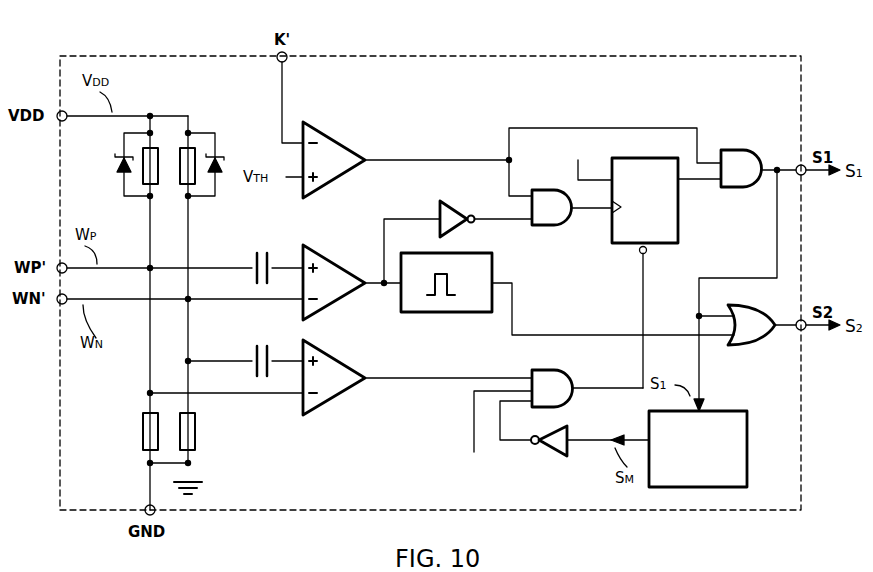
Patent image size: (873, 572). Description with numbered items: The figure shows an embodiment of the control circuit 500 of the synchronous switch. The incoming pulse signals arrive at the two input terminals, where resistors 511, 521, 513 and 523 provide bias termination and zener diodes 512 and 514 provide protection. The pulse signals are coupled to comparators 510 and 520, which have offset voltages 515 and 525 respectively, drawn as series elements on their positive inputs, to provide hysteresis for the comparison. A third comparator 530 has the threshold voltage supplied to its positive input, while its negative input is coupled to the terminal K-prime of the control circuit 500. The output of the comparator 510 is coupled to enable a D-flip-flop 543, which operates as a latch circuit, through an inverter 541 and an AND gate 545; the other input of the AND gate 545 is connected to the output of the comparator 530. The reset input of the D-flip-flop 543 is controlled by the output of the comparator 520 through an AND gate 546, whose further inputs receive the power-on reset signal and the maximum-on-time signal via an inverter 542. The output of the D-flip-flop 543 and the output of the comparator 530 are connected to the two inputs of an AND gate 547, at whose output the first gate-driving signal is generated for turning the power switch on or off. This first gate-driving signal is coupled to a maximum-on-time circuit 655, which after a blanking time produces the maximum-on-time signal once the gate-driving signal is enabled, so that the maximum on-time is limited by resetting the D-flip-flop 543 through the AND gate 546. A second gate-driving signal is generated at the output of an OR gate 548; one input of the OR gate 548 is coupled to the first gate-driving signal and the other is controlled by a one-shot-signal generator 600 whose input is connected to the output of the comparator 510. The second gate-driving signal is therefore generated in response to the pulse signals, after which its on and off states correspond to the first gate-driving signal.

The control circuit 500 is at (801, 99).
The comparator 510 is at (331, 306).
The resistor 511 is at (147, 197).
The zener diode 512 is at (116, 166).
The resistor 513 is at (193, 197).
The zener diode 514 is at (216, 144).
The offset voltage 515 is at (258, 249).
The comparator 520 is at (331, 401).
The resistor 521 is at (142, 436).
The resistor 523 is at (196, 436).
The offset voltage 525 is at (258, 343).
The comparator 530 is at (331, 184).
The inverter 541 is at (451, 205).
The inverter 542 is at (545, 459).
The D-flip-flop 543 is at (662, 248).
The AND gate 545 is at (548, 227).
The AND gate 546 is at (576, 405).
The AND gate 547 is at (738, 189).
The OR gate 548 is at (752, 347).
The one-shot-signal generator 600 is at (445, 313).
The maximum-on-time circuit 655 is at (751, 451).